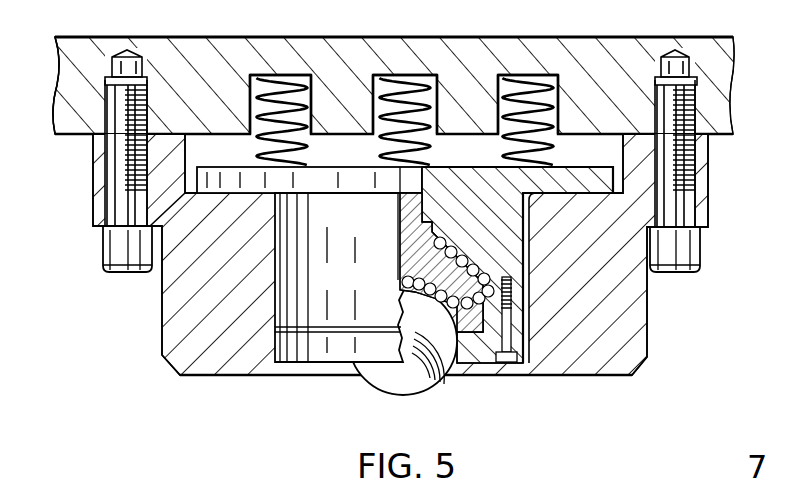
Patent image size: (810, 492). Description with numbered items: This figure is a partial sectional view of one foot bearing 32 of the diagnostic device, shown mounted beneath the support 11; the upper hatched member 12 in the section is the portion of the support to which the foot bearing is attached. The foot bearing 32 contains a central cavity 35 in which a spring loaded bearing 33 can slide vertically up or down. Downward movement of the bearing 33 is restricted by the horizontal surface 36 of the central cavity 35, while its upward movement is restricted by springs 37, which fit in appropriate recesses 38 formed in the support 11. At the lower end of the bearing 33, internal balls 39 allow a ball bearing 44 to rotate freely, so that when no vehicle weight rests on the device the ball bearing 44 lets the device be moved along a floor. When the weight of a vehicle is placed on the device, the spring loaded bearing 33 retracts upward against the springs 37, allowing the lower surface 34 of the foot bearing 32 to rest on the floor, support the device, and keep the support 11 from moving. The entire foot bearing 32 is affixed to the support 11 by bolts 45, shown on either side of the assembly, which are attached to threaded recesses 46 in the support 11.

The support 11 is at (82, 138).
The mounting plate 12 is at (135, 37).
The foot bearing 32 is at (163, 346).
The spring loaded bearing 33 is at (355, 284).
The lower surface 34 is at (213, 376).
The central cavity 35 is at (186, 141).
The horizontal surface 36 is at (617, 193).
The springs 37 is at (290, 77).
The recesses 38 is at (252, 77).
The internal balls 39 is at (437, 302).
The ball bearing 44 is at (389, 388).
The bolts 45 is at (110, 270).
The threaded recesses 46 is at (149, 90).